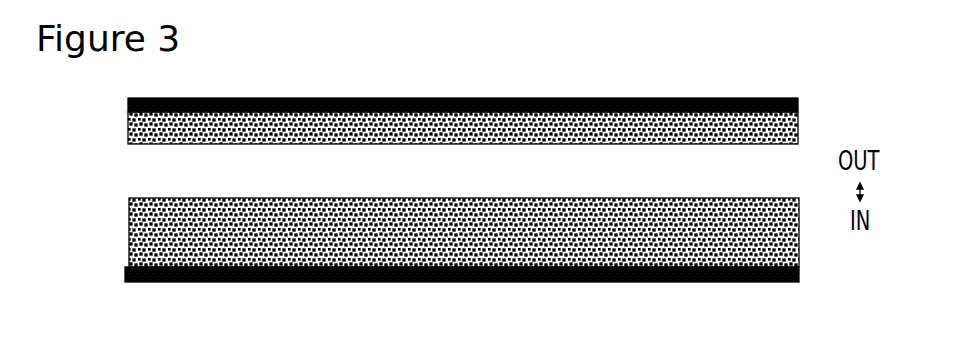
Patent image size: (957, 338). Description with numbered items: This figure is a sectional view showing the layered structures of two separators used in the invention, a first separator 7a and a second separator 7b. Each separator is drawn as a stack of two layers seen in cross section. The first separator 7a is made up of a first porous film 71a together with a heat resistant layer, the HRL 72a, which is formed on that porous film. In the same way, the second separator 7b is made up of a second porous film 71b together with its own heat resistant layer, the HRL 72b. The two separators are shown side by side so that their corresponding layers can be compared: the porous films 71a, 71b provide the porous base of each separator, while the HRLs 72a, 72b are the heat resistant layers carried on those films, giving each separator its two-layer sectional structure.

The first separator 7a is at (511, 106).
The first porous film 71a is at (784, 123).
The HRL 72a is at (790, 90).
The second separator 7b is at (513, 258).
The second porous film 71b is at (786, 247).
The HRL 72b is at (790, 273).